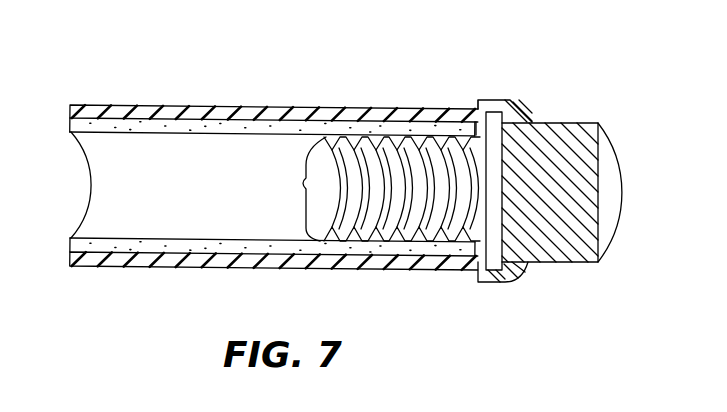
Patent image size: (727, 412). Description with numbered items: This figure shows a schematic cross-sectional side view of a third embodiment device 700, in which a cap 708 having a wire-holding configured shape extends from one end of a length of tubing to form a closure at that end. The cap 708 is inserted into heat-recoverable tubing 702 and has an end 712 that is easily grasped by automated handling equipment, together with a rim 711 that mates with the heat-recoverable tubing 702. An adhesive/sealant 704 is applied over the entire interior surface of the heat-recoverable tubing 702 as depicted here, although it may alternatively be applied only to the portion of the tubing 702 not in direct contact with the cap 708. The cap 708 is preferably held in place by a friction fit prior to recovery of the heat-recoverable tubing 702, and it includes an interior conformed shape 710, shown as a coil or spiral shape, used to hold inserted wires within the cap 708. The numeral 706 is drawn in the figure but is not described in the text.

The device 700 is at (146, 79).
The heat-recoverable tubing 702 is at (320, 114).
The adhesive/sealant 704 is at (208, 128).
The tube inner surface 706 is at (152, 125).
The cap 708 is at (304, 183).
The interior conformed shape 710 is at (388, 160).
The rim 711 is at (477, 100).
The end 712 is at (542, 142).